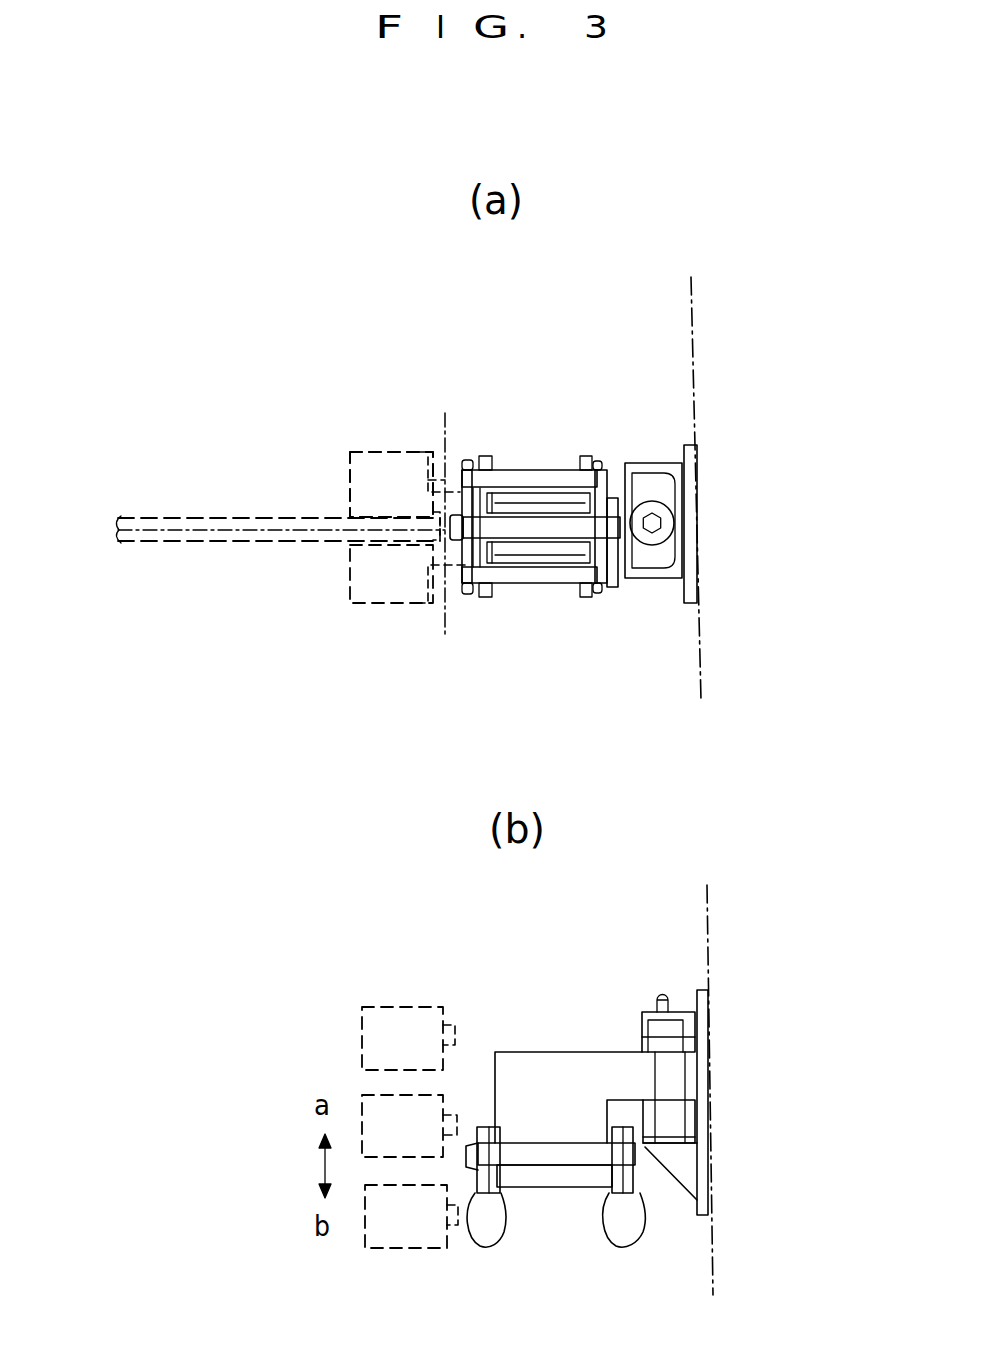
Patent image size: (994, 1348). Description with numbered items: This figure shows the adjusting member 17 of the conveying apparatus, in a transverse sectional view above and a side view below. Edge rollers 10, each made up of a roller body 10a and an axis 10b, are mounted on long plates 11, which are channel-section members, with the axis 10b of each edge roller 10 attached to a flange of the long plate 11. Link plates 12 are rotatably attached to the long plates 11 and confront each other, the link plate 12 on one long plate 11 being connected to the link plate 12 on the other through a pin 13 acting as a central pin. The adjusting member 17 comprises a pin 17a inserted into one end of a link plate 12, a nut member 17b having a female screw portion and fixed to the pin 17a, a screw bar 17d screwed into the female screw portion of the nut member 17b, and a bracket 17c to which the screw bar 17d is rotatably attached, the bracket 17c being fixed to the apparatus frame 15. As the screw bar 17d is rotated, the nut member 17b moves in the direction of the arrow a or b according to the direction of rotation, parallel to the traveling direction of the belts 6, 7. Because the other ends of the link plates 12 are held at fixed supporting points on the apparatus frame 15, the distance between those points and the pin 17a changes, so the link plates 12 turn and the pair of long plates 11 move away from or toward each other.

The belt 6 is at (164, 545).
The belt 7 is at (196, 518).
The edge roller 10 is at (338, 488).
The roller body 10a is at (387, 455).
The axis 10b is at (441, 526).
The long plate 11 is at (488, 458).
The link plate 12 is at (466, 460).
The pin 13 is at (554, 482).
The apparatus frame 15 is at (692, 332).
The adjusting member 17 is at (646, 445).
The pin 17a is at (560, 528).
The nut member 17b is at (525, 1066).
The bracket 17c is at (679, 474).
The screw bar 17d is at (658, 527).